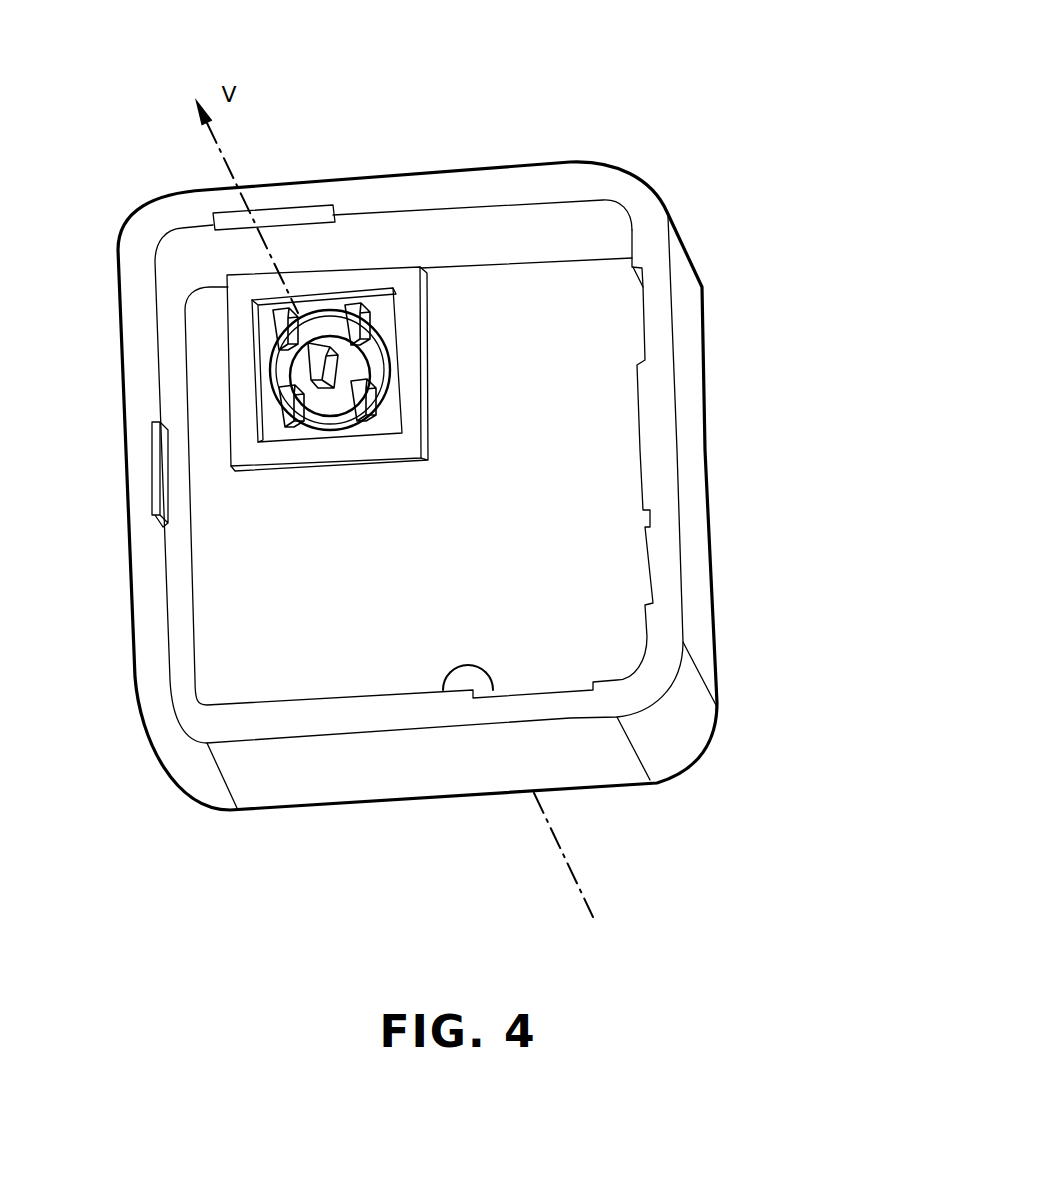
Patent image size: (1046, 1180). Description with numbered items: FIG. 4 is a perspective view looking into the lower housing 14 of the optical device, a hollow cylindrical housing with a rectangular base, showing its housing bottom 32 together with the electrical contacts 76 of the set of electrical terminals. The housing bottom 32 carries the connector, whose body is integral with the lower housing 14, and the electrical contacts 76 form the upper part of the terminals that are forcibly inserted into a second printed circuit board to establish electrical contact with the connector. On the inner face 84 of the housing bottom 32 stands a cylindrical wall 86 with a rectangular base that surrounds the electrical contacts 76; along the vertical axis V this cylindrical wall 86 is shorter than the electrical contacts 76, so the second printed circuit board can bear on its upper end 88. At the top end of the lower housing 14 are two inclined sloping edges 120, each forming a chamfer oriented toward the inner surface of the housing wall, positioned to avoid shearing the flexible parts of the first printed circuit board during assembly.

The lower housing 14 is at (698, 165).
The housing bottom 32 is at (600, 417).
The electrical contacts 76 is at (263, 340).
The inner face 84 is at (593, 530).
The cylindrical wall 86 is at (407, 305).
The upper end 88 is at (410, 377).
The inclined sloping edge 120 is at (307, 217).